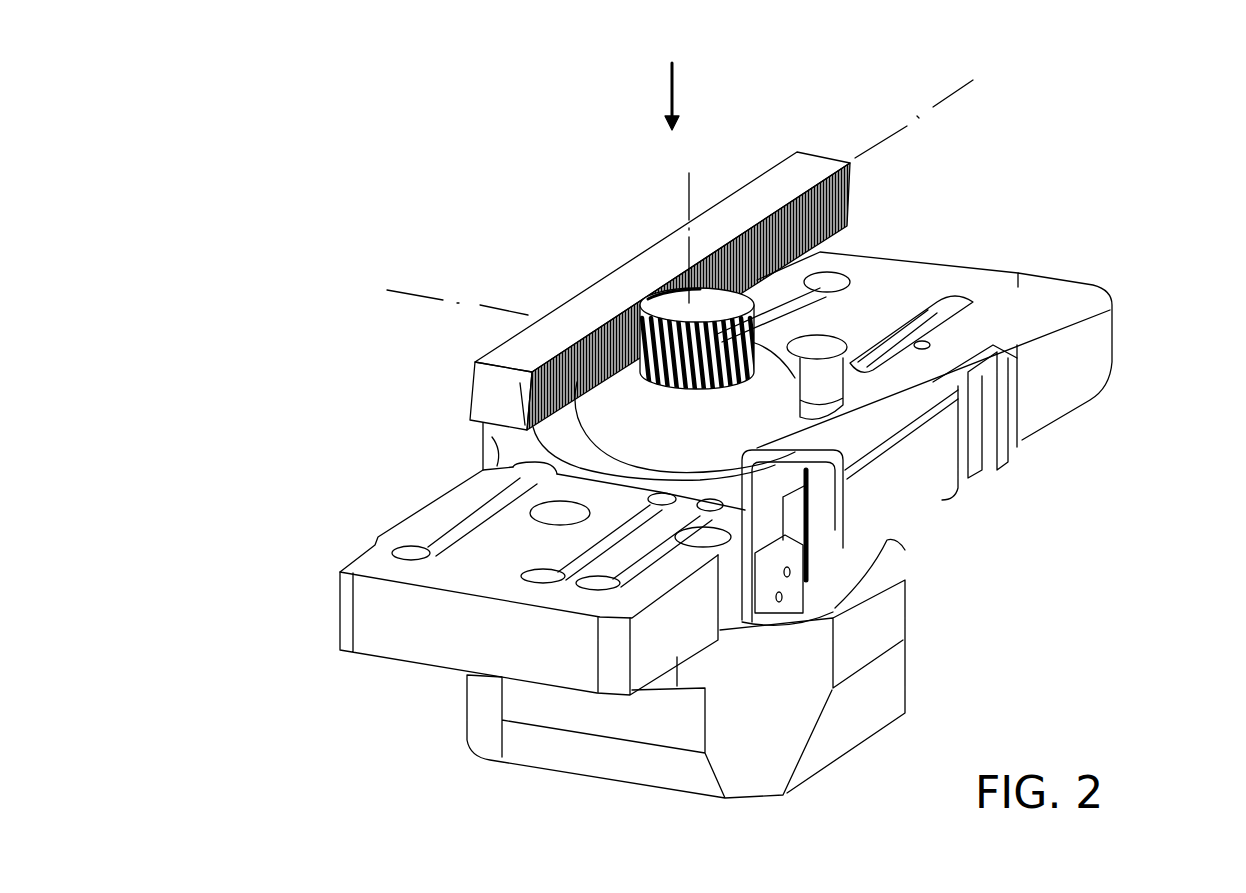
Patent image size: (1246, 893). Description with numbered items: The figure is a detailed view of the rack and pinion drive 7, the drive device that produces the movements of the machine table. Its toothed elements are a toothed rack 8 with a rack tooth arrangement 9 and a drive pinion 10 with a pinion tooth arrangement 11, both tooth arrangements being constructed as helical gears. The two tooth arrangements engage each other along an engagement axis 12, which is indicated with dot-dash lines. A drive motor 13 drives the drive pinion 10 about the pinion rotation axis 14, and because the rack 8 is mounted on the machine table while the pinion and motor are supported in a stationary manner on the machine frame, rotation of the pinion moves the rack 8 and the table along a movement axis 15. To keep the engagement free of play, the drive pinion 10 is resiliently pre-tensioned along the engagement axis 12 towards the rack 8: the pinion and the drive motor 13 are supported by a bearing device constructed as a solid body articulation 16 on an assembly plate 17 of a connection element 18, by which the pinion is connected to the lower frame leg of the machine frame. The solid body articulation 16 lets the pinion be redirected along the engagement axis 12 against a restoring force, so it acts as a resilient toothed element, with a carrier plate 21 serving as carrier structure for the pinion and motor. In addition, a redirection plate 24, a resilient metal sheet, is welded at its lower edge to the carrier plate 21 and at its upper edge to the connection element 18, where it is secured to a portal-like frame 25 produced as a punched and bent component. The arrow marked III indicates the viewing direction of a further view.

The rack and pinion drive 7 is at (1028, 196).
The toothed rack 8 is at (777, 140).
The rack tooth arrangement 9 is at (848, 200).
The drive pinion 10 is at (656, 291).
The pinion tooth arrangement 11 is at (738, 382).
The engagement axis 12 is at (422, 288).
The drive motor 13 is at (862, 715).
The pinion rotation axis 14 is at (683, 182).
The movement axis 15 is at (902, 120).
The solid body articulation 16 is at (366, 563).
The assembly plate 17 is at (417, 632).
The connection element 18 is at (1072, 251).
The carrier plate 21 is at (483, 435).
The redirection plate 24 is at (827, 548).
The portal-like frame 25 is at (1128, 358).
The view direction III is at (672, 80).